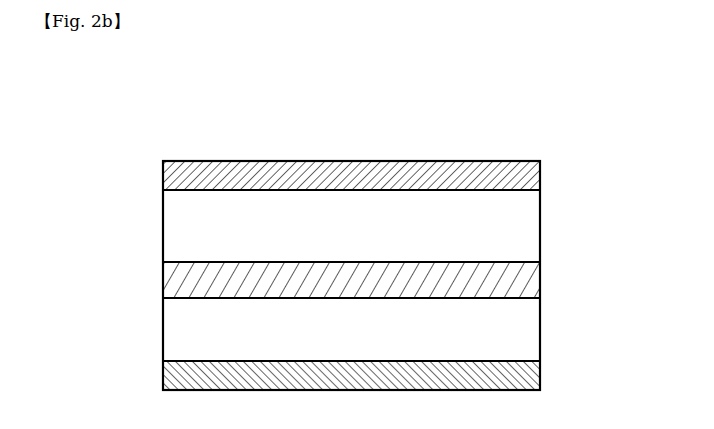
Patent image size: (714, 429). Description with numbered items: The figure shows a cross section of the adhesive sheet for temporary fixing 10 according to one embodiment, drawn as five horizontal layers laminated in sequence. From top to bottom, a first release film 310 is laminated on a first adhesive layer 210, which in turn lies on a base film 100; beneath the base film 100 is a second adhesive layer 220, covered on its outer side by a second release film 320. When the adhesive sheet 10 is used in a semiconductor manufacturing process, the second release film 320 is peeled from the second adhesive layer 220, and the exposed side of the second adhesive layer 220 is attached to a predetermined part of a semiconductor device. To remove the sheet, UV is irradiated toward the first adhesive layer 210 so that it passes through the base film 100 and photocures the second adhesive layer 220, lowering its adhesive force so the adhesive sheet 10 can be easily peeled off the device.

The adhesive sheet for temporary fixing 10 is at (212, 109).
The first release film 310 is at (534, 176).
The first adhesive layer 210 is at (531, 226).
The base film 100 is at (531, 278).
The second adhesive layer 220 is at (531, 329).
The second release film 320 is at (534, 374).